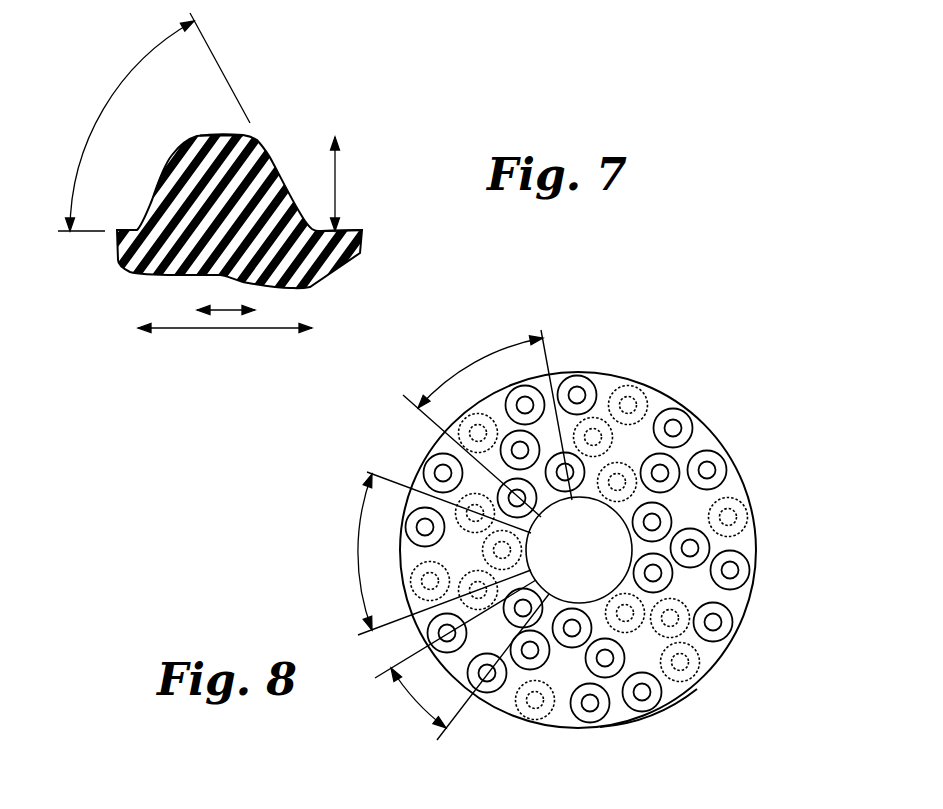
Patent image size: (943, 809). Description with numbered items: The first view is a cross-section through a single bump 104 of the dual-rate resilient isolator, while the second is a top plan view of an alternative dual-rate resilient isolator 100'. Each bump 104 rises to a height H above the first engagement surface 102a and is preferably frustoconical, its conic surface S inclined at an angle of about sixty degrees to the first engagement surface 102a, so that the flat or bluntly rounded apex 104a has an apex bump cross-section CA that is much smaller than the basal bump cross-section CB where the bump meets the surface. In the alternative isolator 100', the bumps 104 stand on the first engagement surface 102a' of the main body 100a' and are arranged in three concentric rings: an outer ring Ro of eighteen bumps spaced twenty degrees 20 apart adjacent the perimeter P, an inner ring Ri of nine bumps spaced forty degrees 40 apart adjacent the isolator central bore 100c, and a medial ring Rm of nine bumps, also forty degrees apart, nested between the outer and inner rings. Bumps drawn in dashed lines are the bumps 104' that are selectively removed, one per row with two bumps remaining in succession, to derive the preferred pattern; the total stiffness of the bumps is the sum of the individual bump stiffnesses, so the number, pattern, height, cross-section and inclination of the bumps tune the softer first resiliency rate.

In FIG. 7, the bump 104 is at (259, 199).
In FIG. 8, the bump 104 is at (632, 549).
In FIG. 7, the apex 104a is at (223, 133).
In FIG. 7, the first engagement surface 102a is at (293, 247).
In FIG. 7, the conic surface S is at (293, 203).
In FIG. 7, the height H is at (340, 185).
In FIG. 7, the apex bump cross-section CA is at (223, 306).
In FIG. 7, the basal bump cross-section CB is at (197, 333).
In FIG. 8, the alternative dual-rate resilient isolator 100' is at (516, 550).
In FIG. 8, the isolator central bore 100c is at (558, 566).
In FIG. 8, the main body 100a' is at (684, 720).
In FIG. 8, the first engagement surface 102a' is at (665, 736).
In FIG. 8, the removed bumps 104' is at (620, 553).
In FIG. 8, the forty-degree spacing 40 is at (444, 483).
In FIG. 8, the twenty-degree spacing 20 is at (418, 698).
In FIG. 8, the inner ring Ri is at (597, 470).
In FIG. 8, the medial ring Rm is at (633, 652).
In FIG. 8, the outer ring Ro is at (564, 715).
In FIG. 8, the perimeter P is at (702, 423).